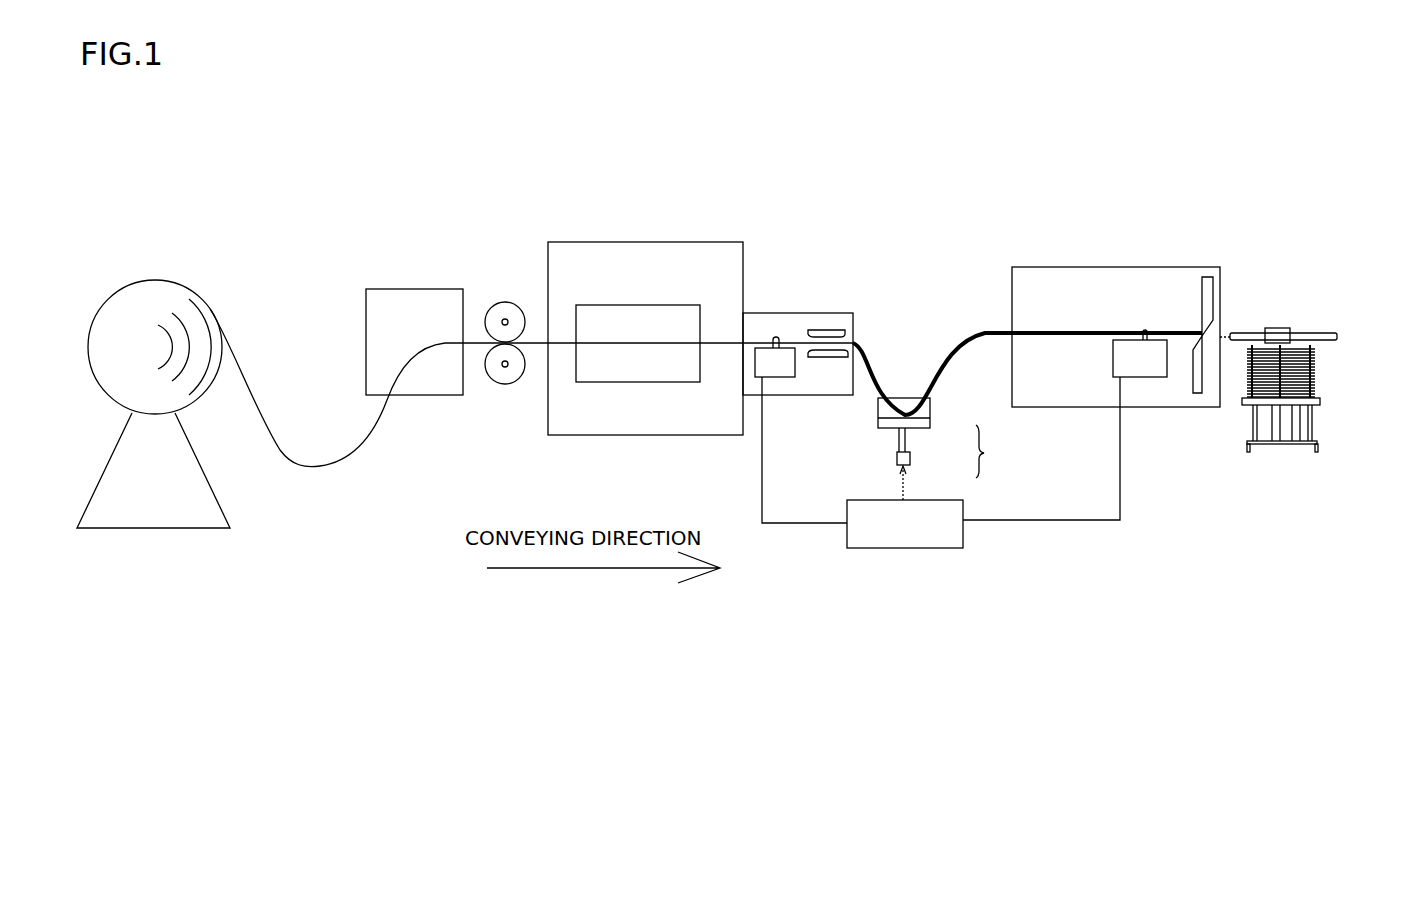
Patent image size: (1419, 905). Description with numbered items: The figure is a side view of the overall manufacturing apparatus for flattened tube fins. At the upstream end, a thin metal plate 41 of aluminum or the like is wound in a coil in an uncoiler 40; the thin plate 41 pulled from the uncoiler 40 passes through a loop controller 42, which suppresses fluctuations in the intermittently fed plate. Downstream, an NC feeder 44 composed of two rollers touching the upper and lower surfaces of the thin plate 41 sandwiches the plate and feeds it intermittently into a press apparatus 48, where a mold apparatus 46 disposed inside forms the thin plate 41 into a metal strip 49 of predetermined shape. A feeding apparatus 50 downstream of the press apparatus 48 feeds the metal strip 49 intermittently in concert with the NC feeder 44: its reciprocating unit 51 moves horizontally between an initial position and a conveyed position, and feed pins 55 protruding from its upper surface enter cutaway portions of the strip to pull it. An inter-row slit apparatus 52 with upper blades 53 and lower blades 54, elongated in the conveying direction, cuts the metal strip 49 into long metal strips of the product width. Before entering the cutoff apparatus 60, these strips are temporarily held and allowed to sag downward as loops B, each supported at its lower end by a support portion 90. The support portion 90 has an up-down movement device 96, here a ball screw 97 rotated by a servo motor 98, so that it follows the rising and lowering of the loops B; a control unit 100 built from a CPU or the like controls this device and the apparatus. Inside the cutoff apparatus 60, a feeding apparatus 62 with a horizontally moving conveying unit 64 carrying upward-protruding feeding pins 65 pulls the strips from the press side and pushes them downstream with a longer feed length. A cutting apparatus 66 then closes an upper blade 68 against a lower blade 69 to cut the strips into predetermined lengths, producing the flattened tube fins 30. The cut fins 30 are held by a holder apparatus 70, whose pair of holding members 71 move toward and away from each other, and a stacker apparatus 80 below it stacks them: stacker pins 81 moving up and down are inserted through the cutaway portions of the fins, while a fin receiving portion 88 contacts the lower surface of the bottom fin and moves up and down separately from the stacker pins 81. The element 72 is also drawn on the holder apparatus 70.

The flattened tube fin 30 is at (1317, 355).
The uncoiler 40 is at (190, 310).
The thin metal plate 41 is at (243, 373).
The loop controller 42 is at (413, 298).
The NC feeder 44 is at (505, 302).
The mold apparatus 46 is at (612, 322).
The press apparatus 48 is at (645, 309).
The metal strip 49 is at (728, 340).
The feeding apparatus 50 is at (775, 354).
The reciprocating unit 51 is at (782, 338).
The inter-row slit apparatus 52 is at (834, 337).
The upper blades 53 is at (830, 333).
The lower blades 54 is at (828, 358).
The feed pins 55 is at (776, 336).
The cutoff apparatus 60 is at (1135, 335).
The feeding apparatus 62 is at (1116, 361).
The conveying unit 64 is at (1128, 366).
The feeding pins 65 is at (1147, 333).
The cutting apparatus 66 is at (1224, 338).
The upper blade 68 is at (1210, 286).
The lower blade 69 is at (1201, 385).
The holder apparatus 70 is at (1306, 318).
The holding members 71 is at (1337, 337).
The pressing block 72 is at (1277, 327).
The stacker apparatus 80 is at (1325, 418).
The stacker pins 81 is at (1378, 350).
The fin receiving portion 88 is at (1247, 402).
The support portion 90 is at (938, 410).
The up-down movement device 96 is at (956, 451).
The ball screw 97 is at (912, 442).
The servo motor 98 is at (912, 458).
The control unit 100 is at (847, 538).
The loop B is at (903, 410).